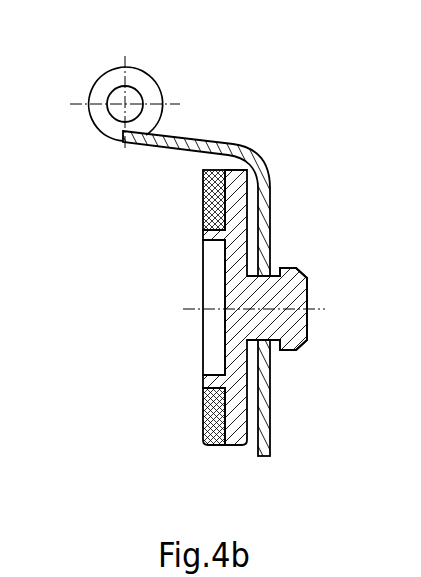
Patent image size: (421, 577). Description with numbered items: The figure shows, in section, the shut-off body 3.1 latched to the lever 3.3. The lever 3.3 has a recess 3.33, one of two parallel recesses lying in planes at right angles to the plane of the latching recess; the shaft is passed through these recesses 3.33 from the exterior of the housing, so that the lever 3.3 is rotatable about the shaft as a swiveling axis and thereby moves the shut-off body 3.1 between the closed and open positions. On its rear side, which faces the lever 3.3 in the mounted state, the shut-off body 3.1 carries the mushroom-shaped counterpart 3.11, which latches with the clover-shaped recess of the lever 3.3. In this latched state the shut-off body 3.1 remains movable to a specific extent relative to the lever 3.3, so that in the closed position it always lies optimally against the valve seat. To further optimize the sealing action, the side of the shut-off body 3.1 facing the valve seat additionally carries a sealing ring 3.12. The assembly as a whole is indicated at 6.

The recess 3.33 is at (117, 88).
The lever 3.3 is at (270, 216).
The shut-off body 3.1 is at (203, 360).
The counterpart 3.11 is at (297, 283).
The sealing ring 3.12 is at (203, 208).
The hinge assembly 6 is at (287, 363).